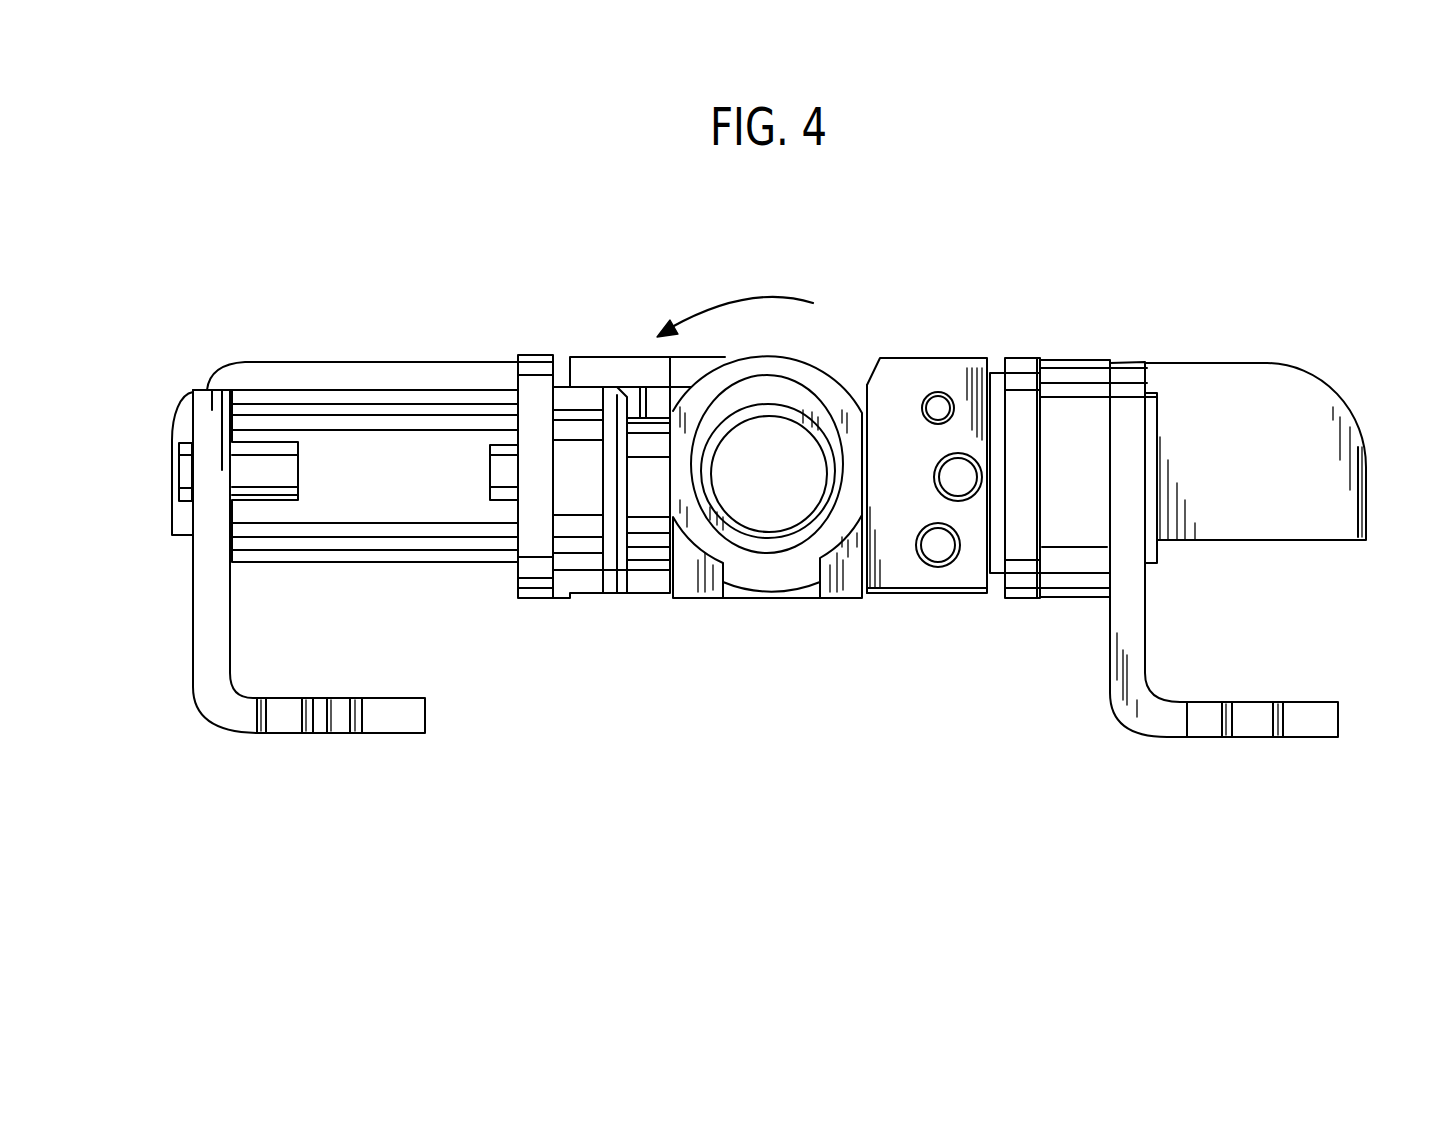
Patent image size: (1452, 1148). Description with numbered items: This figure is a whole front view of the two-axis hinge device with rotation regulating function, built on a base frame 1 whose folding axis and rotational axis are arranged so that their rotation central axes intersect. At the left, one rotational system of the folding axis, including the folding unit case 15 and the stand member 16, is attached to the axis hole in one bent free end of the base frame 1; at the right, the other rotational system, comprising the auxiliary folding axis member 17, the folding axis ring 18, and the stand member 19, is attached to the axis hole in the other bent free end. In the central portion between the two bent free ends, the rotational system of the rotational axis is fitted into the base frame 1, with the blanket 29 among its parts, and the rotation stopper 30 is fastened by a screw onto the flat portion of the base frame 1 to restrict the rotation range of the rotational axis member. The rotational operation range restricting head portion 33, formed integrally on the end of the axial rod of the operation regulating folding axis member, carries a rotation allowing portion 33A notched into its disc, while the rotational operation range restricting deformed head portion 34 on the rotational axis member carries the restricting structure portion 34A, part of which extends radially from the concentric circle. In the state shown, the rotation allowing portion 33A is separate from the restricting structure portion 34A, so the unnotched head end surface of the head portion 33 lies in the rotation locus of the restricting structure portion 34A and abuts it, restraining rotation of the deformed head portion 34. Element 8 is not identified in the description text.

The base frame 1 is at (850, 370).
The holder block 8 is at (584, 422).
The folding unit case 15 is at (445, 407).
The stand member 16 is at (247, 713).
The auxiliary folding axis member 17 is at (1000, 395).
The folding axis ring 18 is at (1070, 410).
The stand member 19 is at (1177, 718).
The blanket 29 is at (1291, 403).
The rotation stopper 30 is at (910, 385).
The rotational operation range restricting head portion 33 is at (676, 548).
The rotation allowing portion 33A is at (587, 517).
The rotational operation range restricting deformed head portion 34 is at (825, 520).
The restricting structure portion 34A is at (867, 430).